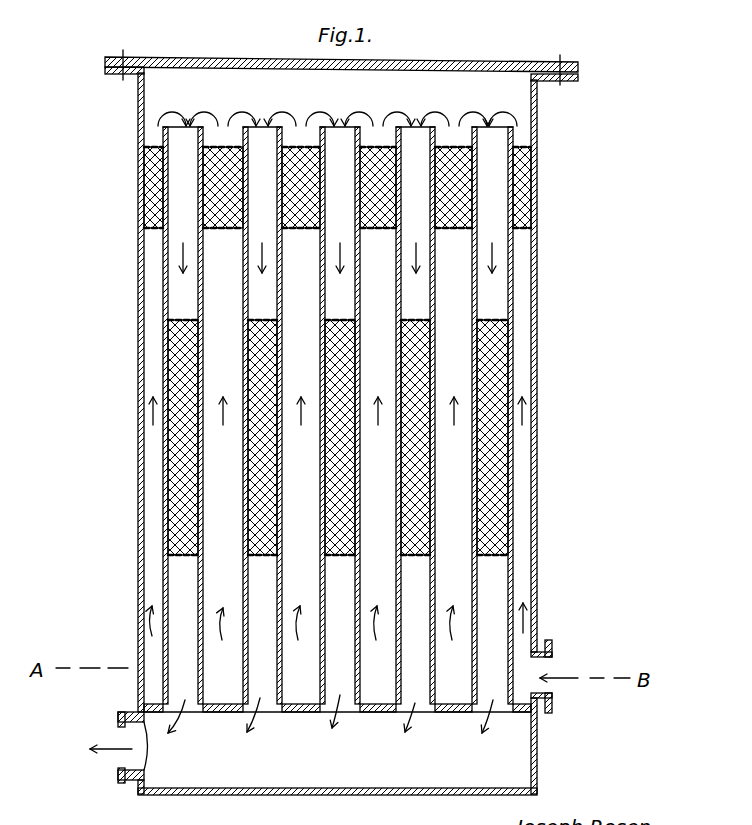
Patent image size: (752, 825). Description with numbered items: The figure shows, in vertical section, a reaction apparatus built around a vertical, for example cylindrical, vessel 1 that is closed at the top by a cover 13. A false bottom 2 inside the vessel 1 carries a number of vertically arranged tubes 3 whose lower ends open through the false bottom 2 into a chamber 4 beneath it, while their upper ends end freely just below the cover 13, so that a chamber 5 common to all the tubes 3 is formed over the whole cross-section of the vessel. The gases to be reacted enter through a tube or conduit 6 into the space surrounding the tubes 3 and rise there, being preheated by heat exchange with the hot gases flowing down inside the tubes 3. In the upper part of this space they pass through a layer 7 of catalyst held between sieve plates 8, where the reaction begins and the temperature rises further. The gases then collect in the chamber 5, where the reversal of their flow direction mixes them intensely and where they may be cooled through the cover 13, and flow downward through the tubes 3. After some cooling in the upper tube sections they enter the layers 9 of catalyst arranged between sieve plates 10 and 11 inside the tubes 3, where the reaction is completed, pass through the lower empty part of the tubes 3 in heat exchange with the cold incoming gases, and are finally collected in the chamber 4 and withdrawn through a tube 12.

The vessel 1 is at (139, 333).
The false bottom 2 is at (221, 710).
The tubes 3 is at (165, 366).
The chamber 4 is at (337, 746).
The chamber 5 is at (342, 122).
The tube or conduit 6 is at (550, 702).
The layer of catalyst 7 is at (216, 229).
The sieve plates 8 is at (150, 145).
The layers of catalyst 9 is at (178, 441).
The sieve plate 10 is at (178, 557).
The sieve plate 11 is at (190, 320).
The tube 12 is at (118, 772).
The cover 13 is at (209, 47).